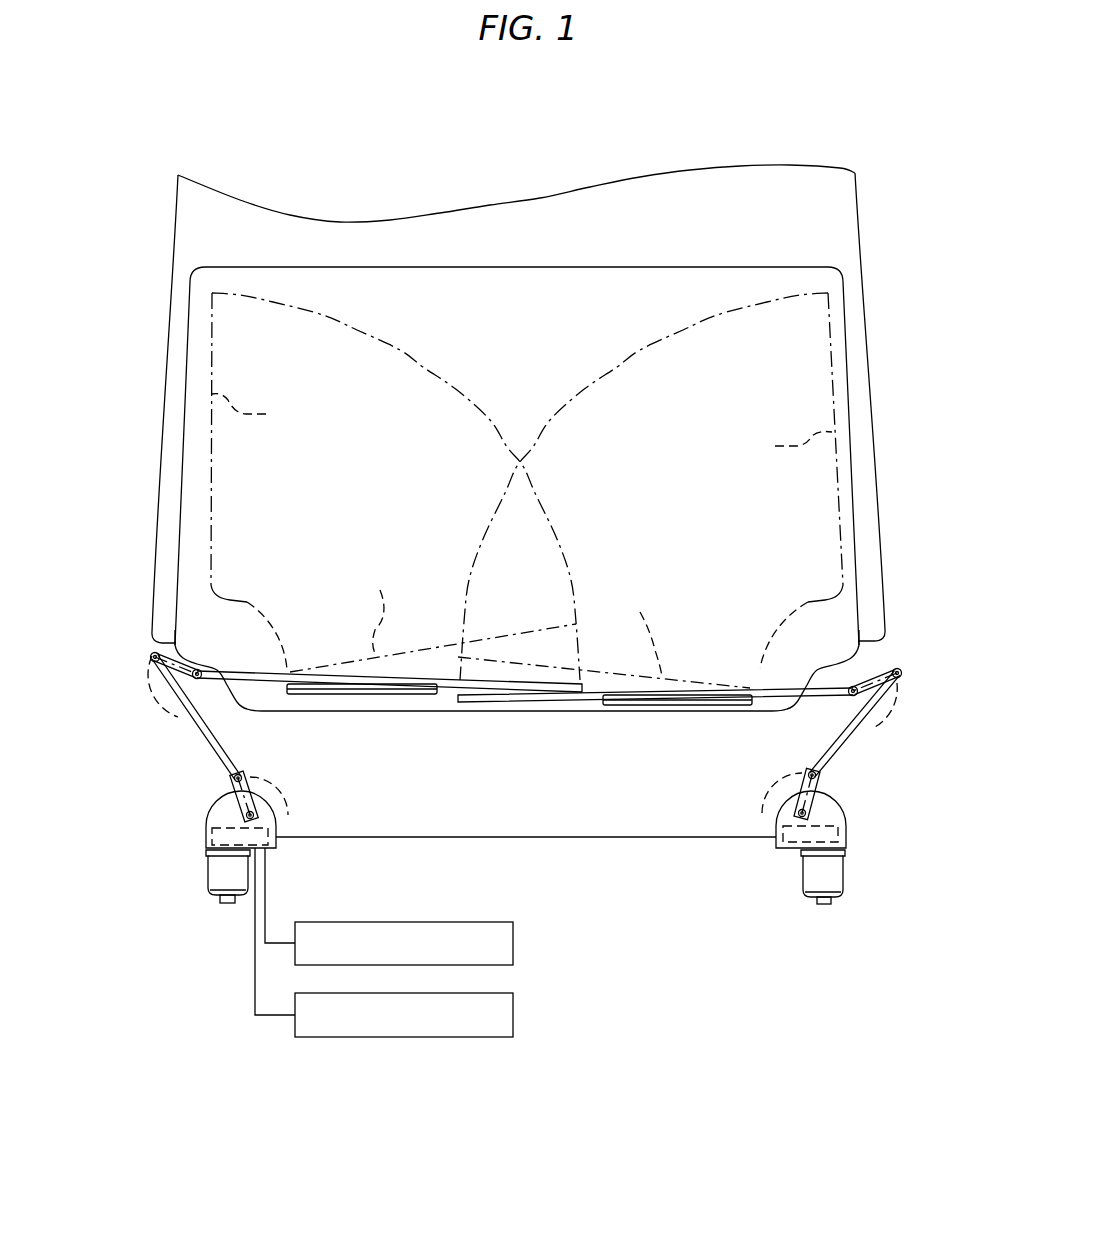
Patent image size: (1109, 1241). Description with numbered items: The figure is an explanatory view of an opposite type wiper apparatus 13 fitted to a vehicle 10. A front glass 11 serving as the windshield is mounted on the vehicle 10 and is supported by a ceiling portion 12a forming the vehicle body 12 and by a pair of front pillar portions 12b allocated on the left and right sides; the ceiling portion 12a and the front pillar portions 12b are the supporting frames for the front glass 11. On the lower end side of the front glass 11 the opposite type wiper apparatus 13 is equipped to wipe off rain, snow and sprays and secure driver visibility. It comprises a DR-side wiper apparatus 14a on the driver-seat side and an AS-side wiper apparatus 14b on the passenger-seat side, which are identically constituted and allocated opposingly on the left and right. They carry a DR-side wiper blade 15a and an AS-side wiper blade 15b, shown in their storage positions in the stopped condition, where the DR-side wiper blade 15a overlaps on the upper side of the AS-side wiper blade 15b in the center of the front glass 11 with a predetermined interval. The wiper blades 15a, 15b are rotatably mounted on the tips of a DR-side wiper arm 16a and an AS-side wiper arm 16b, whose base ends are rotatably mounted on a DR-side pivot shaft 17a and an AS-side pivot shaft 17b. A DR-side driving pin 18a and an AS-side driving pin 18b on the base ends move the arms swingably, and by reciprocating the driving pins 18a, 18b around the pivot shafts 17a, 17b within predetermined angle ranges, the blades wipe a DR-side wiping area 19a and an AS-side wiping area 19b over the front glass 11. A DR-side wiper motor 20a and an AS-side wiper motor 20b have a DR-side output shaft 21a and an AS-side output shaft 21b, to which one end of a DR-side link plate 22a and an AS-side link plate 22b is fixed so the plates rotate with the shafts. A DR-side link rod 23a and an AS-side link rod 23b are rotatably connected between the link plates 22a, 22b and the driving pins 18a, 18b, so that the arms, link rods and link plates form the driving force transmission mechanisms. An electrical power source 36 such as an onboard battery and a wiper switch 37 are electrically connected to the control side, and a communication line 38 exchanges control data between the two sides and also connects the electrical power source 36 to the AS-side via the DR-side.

The vehicle 10 is at (300, 160).
The front glass 11 is at (473, 357).
The vehicle body 12 is at (515, 402).
The ceiling portion 12a is at (620, 225).
The front pillar portions 12b is at (175, 350).
The opposite type wiper apparatus 13 is at (515, 949).
The DR-side wiper apparatus 14a is at (225, 920).
The AS-side wiper apparatus 14b is at (836, 918).
The DR-side wiper blade 15a is at (340, 692).
The AS-side wiper blade 15b is at (546, 704).
The DR-side wiper arm 16a is at (265, 682).
The AS-side wiper arm 16b is at (773, 693).
The DR-side pivot shaft 17a is at (388, 646).
The AS-side pivot shaft 17b is at (658, 722).
The DR-side driving pin 18a is at (153, 653).
The AS-side driving pin 18b is at (900, 668).
The DR-side wiping area 19a is at (360, 330).
The AS-side wiping area 19b is at (760, 302).
The DR-side wiper motor 20a is at (204, 901).
The AS-side wiper motor 20b is at (810, 898).
The DR-side output shaft 21a is at (234, 815).
The AS-side output shaft 21b is at (813, 810).
The DR-side link plate 22a is at (233, 790).
The AS-side link plate 22b is at (827, 792).
The DR-side link rod 23a is at (160, 684).
The AS-side link rod 23b is at (875, 713).
The electrical power source 36 is at (515, 943).
The wiper switch 37 is at (515, 1015).
The communication line 38 is at (558, 838).